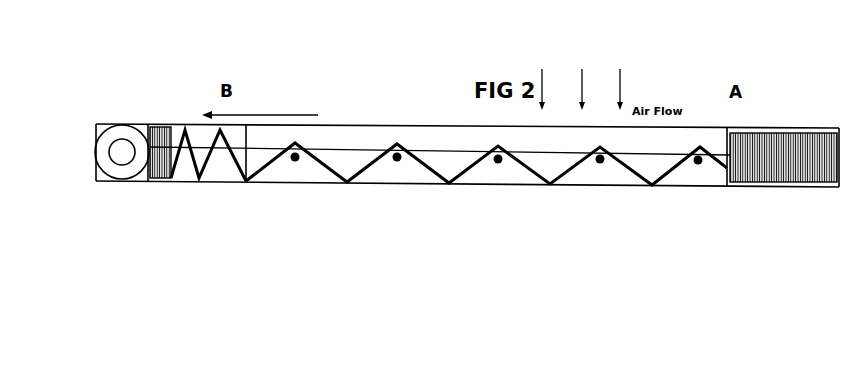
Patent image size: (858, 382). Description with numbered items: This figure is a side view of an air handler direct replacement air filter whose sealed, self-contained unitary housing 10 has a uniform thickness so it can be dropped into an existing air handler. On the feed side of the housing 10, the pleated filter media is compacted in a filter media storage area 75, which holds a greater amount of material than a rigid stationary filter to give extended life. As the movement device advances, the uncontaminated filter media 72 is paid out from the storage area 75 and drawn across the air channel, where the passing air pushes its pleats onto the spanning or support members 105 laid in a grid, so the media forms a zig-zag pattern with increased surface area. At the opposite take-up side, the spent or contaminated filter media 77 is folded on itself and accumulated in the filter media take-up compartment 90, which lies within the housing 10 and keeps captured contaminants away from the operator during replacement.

The unitary housing 10 is at (414, 191).
The contaminated filter media 77 is at (159, 126).
The filter media take-up compartment 90 is at (246, 192).
The spanning or support members 105 is at (502, 171).
The uncontaminated filter media 72 is at (773, 148).
The filter media storage area 75 is at (840, 195).